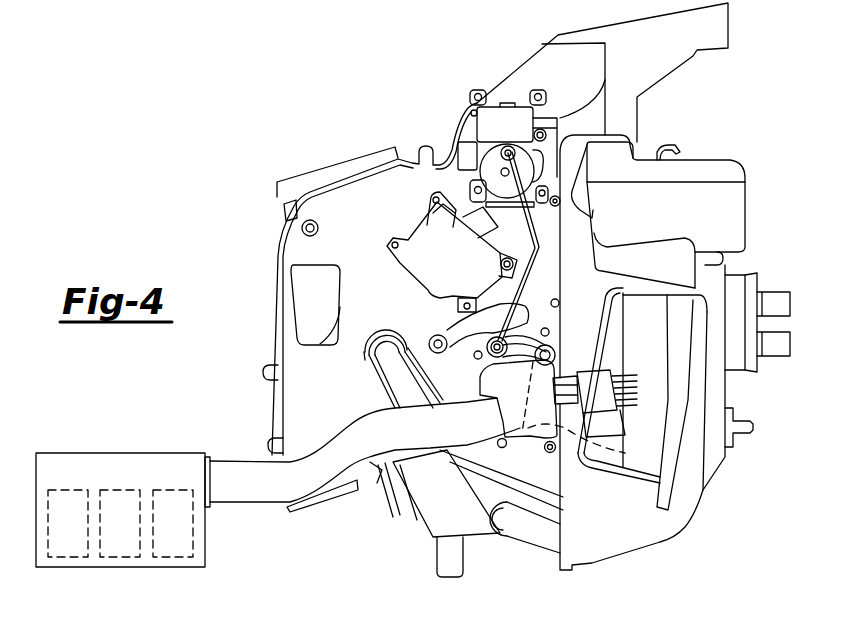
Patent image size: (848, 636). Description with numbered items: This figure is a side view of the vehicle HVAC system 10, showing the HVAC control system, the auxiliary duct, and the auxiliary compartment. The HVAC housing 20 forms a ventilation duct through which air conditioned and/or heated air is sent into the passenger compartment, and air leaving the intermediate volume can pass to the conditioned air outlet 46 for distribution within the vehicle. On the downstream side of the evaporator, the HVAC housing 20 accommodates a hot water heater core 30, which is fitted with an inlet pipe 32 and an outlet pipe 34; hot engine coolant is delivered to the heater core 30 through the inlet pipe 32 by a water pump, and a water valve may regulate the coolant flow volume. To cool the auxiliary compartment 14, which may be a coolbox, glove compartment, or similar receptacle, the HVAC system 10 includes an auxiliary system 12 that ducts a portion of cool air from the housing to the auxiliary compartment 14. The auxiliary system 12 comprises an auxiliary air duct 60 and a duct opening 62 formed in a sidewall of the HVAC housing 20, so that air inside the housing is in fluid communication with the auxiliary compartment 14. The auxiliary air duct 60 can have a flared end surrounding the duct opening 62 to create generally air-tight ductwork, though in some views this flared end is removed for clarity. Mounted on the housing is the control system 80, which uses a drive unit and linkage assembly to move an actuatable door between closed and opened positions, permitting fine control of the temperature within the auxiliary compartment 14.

The HVAC system 10 is at (294, 76).
The auxiliary system 12 is at (363, 513).
The auxiliary compartment 14 is at (62, 453).
The HVAC housing 20 is at (279, 410).
The heater core 30 is at (473, 495).
The inlet pipe 32 is at (507, 532).
The outlet pipe 34 is at (532, 498).
The conditioned air outlet 46 is at (293, 182).
The auxiliary air duct 60 is at (255, 500).
The duct opening 62 is at (622, 453).
The control system 80 is at (423, 137).